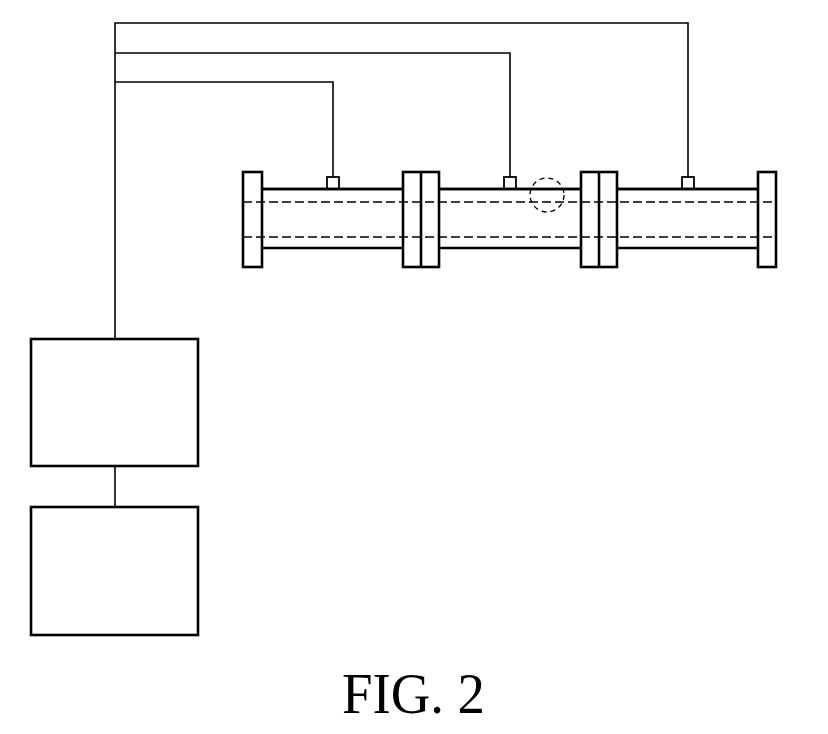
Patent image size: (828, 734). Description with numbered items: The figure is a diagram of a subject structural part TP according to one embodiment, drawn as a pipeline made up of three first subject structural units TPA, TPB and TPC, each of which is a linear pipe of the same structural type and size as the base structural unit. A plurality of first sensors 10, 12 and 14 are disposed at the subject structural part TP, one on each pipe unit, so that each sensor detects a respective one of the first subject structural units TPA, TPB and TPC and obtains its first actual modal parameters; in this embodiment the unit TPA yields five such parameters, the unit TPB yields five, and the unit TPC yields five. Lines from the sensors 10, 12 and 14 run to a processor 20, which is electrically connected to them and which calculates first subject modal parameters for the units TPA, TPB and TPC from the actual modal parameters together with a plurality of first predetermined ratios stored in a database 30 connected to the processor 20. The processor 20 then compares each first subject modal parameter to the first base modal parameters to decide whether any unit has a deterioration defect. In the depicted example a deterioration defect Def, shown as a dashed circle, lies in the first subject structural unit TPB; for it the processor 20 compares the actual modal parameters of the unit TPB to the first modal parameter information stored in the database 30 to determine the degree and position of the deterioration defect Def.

The first sensor 10 is at (327, 183).
The first sensor 12 is at (504, 183).
The first sensor 14 is at (682, 183).
The processor 20 is at (130, 431).
The database 30 is at (130, 598).
The subject structural part TP is at (712, 310).
The first subject structural unit TPA is at (332, 249).
The first subject structural unit TPB is at (508, 249).
The first subject structural unit TPC is at (687, 249).
The deterioration defect Def is at (550, 179).